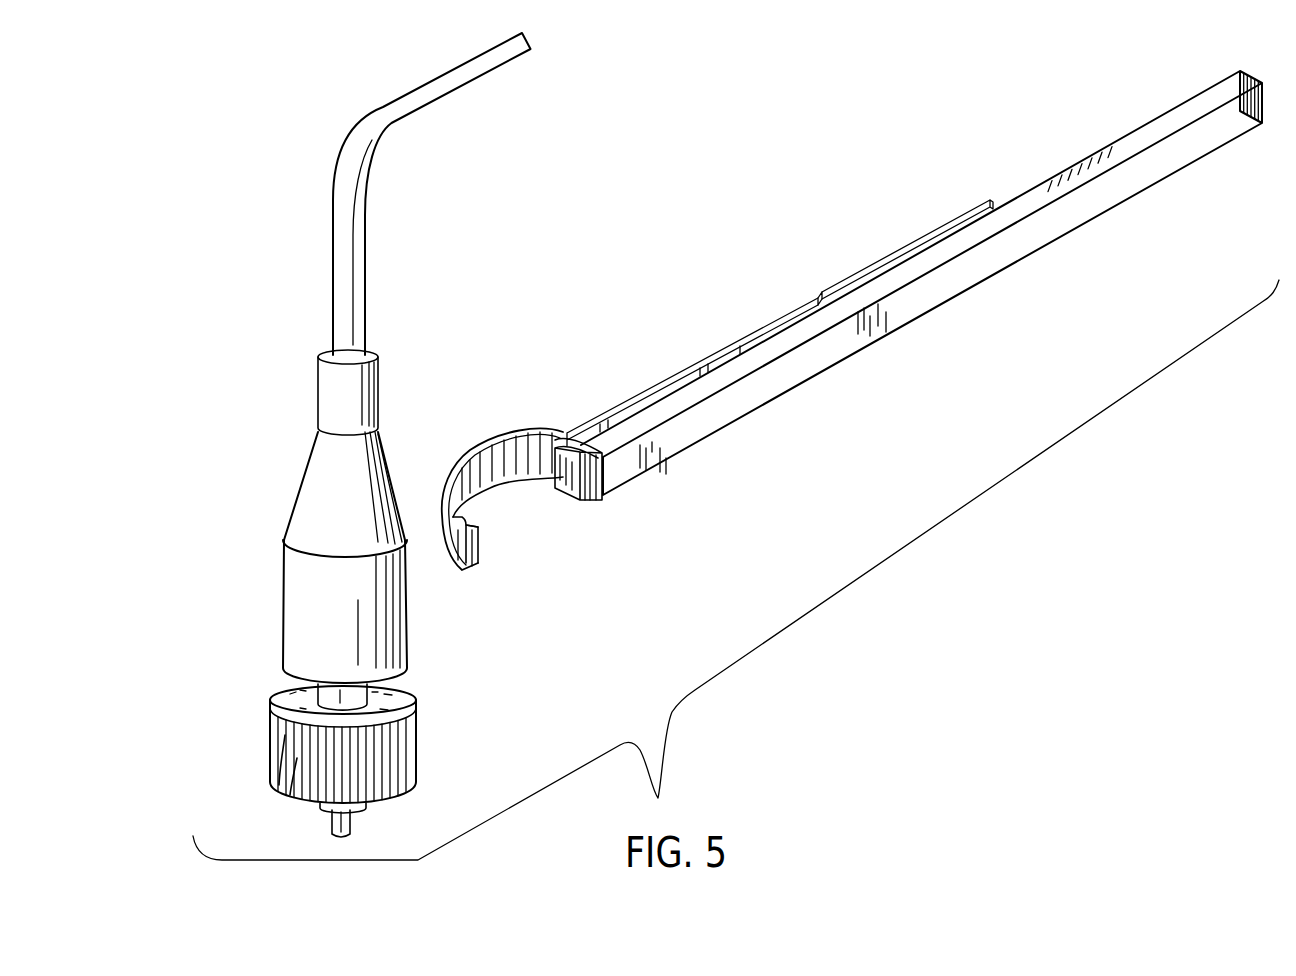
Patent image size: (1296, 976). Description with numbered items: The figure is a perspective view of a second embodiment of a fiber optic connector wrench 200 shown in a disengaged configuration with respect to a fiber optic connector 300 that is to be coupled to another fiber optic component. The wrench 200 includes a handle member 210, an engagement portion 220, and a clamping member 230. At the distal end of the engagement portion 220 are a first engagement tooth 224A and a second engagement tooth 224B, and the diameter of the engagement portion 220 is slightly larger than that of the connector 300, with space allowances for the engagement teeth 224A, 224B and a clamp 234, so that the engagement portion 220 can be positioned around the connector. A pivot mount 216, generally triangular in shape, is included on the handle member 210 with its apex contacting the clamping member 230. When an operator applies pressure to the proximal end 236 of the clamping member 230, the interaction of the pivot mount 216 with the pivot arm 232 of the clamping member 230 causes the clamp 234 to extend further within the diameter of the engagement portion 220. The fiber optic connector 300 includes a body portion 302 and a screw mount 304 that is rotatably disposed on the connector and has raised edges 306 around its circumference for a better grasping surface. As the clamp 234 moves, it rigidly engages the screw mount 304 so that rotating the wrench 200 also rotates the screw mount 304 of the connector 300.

The fiber optic connector wrench 200 is at (887, 157).
The handle member 210 is at (1002, 277).
The pivot mount 216 is at (818, 298).
The engagement portion 220 is at (490, 435).
The first engagement tooth 224A is at (481, 553).
The second engagement tooth 224B is at (480, 509).
The clamping member 230 is at (750, 326).
The pivot arm 232 is at (887, 257).
The clamp 234 is at (572, 500).
The proximal end 236 is at (976, 204).
The fiber optic connector 300 is at (281, 498).
The body portion 302 is at (285, 596).
The screw mount 304 is at (415, 733).
The raised edges 306 is at (283, 736).